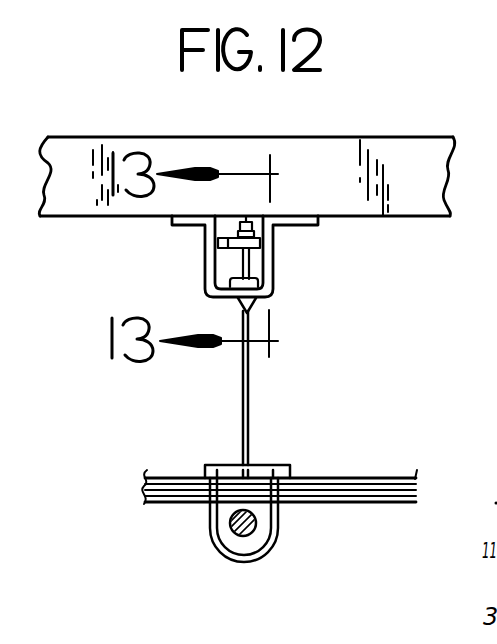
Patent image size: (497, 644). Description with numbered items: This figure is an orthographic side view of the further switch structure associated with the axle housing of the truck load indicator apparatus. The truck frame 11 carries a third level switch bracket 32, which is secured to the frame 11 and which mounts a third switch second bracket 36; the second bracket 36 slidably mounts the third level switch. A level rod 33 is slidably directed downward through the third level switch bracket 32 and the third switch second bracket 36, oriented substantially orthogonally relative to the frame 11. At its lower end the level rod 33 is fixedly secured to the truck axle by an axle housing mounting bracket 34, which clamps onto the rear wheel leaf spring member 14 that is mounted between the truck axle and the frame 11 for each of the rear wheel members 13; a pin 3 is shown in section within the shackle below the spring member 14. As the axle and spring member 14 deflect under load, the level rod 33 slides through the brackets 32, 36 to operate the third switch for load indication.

The frame 11 is at (408, 207).
The rear wheel members 13 is at (195, 257).
The third level switch bracket 32 is at (282, 283).
The third switch second bracket 36 is at (236, 241).
The level rod 33 is at (250, 393).
The axle housing mounting bracket 34 is at (280, 461).
The rear wheel leaf spring member 14 is at (367, 476).
The pin 3 is at (268, 525).